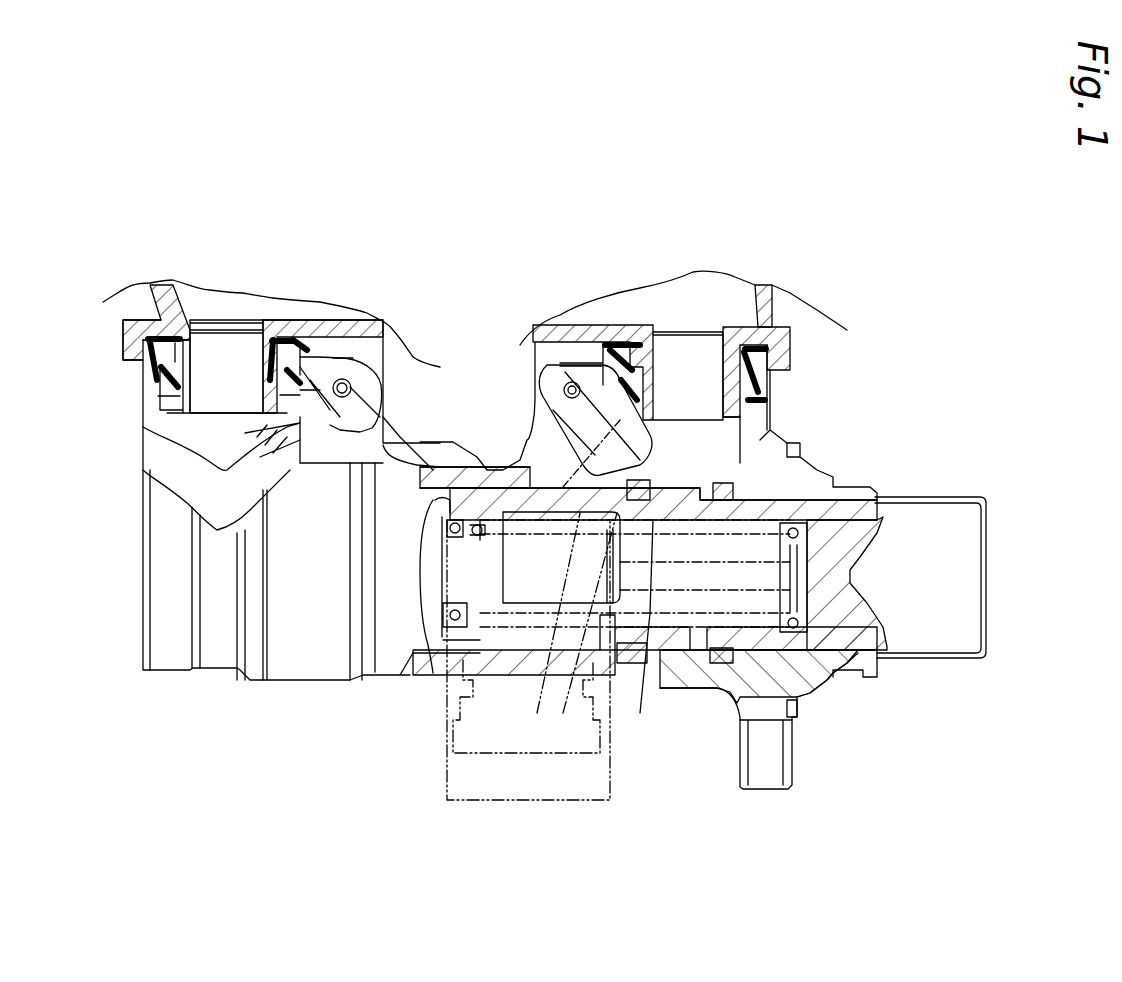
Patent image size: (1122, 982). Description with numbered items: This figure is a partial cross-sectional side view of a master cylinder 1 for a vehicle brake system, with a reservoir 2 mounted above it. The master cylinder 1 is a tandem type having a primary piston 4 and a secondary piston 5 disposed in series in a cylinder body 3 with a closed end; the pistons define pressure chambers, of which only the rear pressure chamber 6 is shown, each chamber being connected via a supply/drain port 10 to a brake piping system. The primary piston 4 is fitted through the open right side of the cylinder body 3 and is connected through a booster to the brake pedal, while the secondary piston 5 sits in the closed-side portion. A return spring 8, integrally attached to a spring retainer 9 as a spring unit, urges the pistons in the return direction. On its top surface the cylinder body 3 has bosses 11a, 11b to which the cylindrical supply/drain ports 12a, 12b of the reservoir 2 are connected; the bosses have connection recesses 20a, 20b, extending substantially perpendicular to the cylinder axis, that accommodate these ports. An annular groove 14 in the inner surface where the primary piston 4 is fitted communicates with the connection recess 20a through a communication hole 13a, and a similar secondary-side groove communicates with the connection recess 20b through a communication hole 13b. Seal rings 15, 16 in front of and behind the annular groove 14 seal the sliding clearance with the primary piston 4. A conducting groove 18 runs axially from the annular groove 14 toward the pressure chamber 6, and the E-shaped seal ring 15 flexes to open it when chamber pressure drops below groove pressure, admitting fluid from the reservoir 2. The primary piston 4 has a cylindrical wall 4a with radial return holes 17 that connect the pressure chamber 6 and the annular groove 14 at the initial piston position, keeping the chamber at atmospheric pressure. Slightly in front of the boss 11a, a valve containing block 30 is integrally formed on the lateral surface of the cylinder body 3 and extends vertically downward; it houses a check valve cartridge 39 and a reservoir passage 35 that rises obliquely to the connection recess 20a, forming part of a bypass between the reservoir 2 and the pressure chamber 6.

The master cylinder 1 is at (903, 343).
The reservoir 2 is at (778, 296).
The cylinder body 3 is at (807, 690).
The primary piston 4 is at (870, 640).
The cylindrical wall 4a is at (640, 655).
The secondary piston 5 is at (427, 673).
The pressure chamber 6 is at (440, 660).
The return spring 8 is at (782, 625).
The spring retainer 9 is at (712, 583).
The supply/drain port 10 is at (437, 500).
The boss 11a is at (763, 427).
The boss 11b is at (322, 377).
The supply/drain port 12a is at (653, 377).
The supply/drain port 12b is at (187, 387).
The communication hole 13a is at (687, 473).
The communication hole 13b is at (167, 437).
The annular groove 14 is at (705, 498).
The seal ring 15 is at (560, 480).
The seal ring 16 is at (733, 493).
The return hole 17 is at (665, 660).
The conducting groove 18 is at (603, 507).
The connection recess 20a is at (764, 417).
The connection recess 20b is at (283, 355).
The valve containing block 30 is at (443, 800).
The reservoir passage 35 is at (567, 677).
The cartridge 39 is at (497, 755).